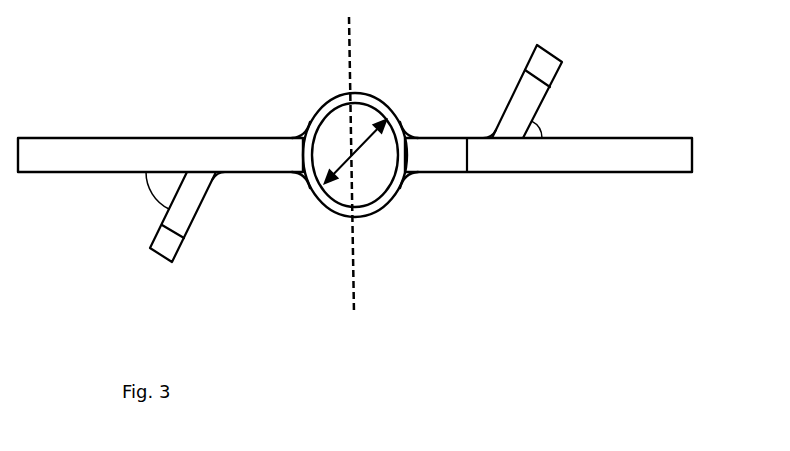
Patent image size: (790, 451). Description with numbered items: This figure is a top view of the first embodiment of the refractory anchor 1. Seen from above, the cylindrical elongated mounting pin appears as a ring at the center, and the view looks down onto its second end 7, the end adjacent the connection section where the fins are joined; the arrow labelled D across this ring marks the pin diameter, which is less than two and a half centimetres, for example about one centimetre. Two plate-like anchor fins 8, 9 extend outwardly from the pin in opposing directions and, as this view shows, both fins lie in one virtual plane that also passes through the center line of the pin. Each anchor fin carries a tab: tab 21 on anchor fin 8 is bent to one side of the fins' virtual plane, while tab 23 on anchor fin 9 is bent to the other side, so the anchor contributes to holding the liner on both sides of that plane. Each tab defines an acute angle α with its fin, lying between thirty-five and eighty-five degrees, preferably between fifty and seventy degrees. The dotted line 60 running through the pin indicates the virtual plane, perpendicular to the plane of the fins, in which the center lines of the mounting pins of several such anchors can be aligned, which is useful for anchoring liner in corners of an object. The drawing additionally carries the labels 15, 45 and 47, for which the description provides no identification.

The refractory anchor 1 is at (485, 258).
The second end 7 is at (340, 133).
The anchor fin 8 is at (82, 153).
The anchor fin 9 is at (598, 155).
The ring portion 15 is at (384, 108).
The tab 21 is at (185, 208).
The tab 23 is at (532, 102).
The first arm section 45 is at (138, 152).
The second arm section 47 is at (552, 158).
The dotted line 60 is at (353, 263).